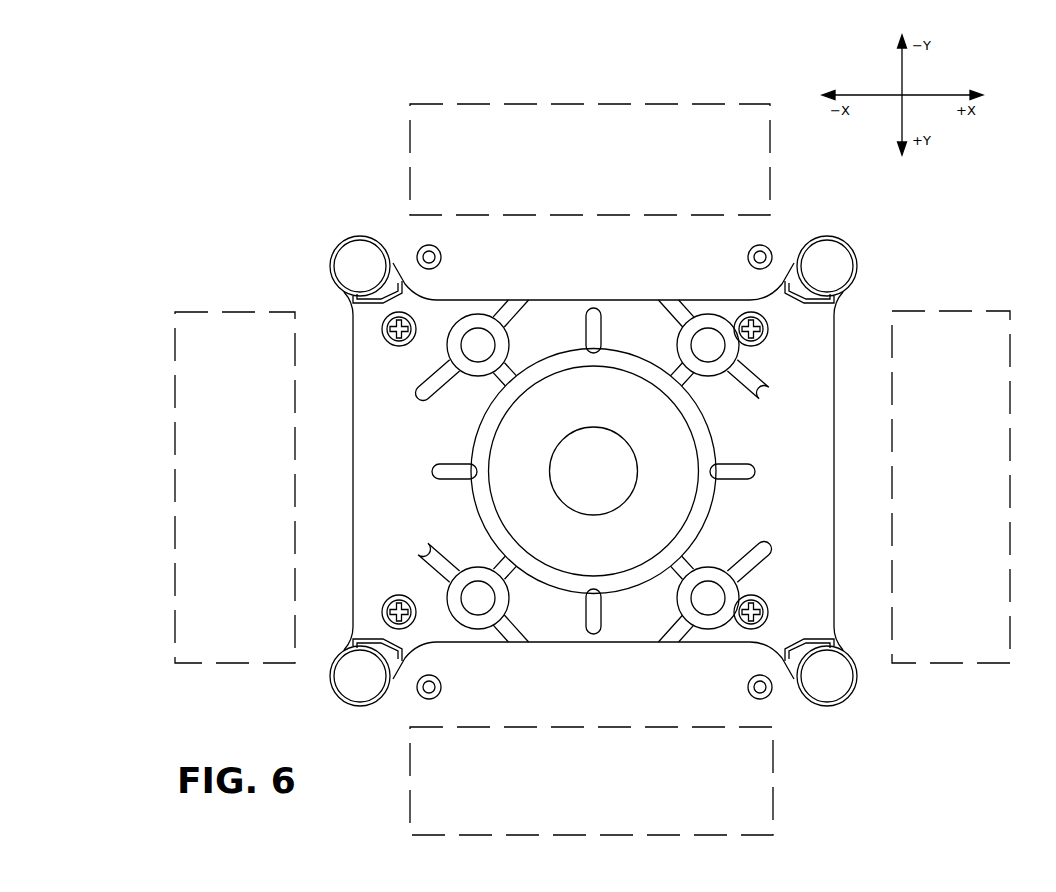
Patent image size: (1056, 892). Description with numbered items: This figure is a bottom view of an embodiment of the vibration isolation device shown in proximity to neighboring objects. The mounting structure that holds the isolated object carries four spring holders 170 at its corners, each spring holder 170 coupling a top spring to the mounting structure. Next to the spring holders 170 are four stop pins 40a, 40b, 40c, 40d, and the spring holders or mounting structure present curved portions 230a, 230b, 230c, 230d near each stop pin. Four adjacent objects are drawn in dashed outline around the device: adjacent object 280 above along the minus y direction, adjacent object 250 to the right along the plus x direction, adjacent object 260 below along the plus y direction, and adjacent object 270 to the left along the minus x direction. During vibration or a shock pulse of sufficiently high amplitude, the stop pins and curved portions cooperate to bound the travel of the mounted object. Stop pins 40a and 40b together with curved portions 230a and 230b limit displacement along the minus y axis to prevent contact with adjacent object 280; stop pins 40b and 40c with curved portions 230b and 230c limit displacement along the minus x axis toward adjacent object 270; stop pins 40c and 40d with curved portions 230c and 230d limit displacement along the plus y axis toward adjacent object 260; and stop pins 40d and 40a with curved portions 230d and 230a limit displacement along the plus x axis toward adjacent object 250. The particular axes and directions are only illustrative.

The spring holder 170 is at (331, 277).
The curved portion 230a is at (421, 290).
The curved portion 230b is at (767, 295).
The curved portion 230c is at (775, 652).
The curved portion 230d is at (408, 658).
The stop pin 40a is at (445, 248).
The stop pin 40b is at (770, 243).
The stop pin 40c is at (773, 697).
The stop pin 40d is at (447, 687).
The adjacent object 250 is at (945, 310).
The adjacent object 260 is at (755, 790).
The adjacent object 270 is at (248, 665).
The adjacent object 280 is at (640, 104).